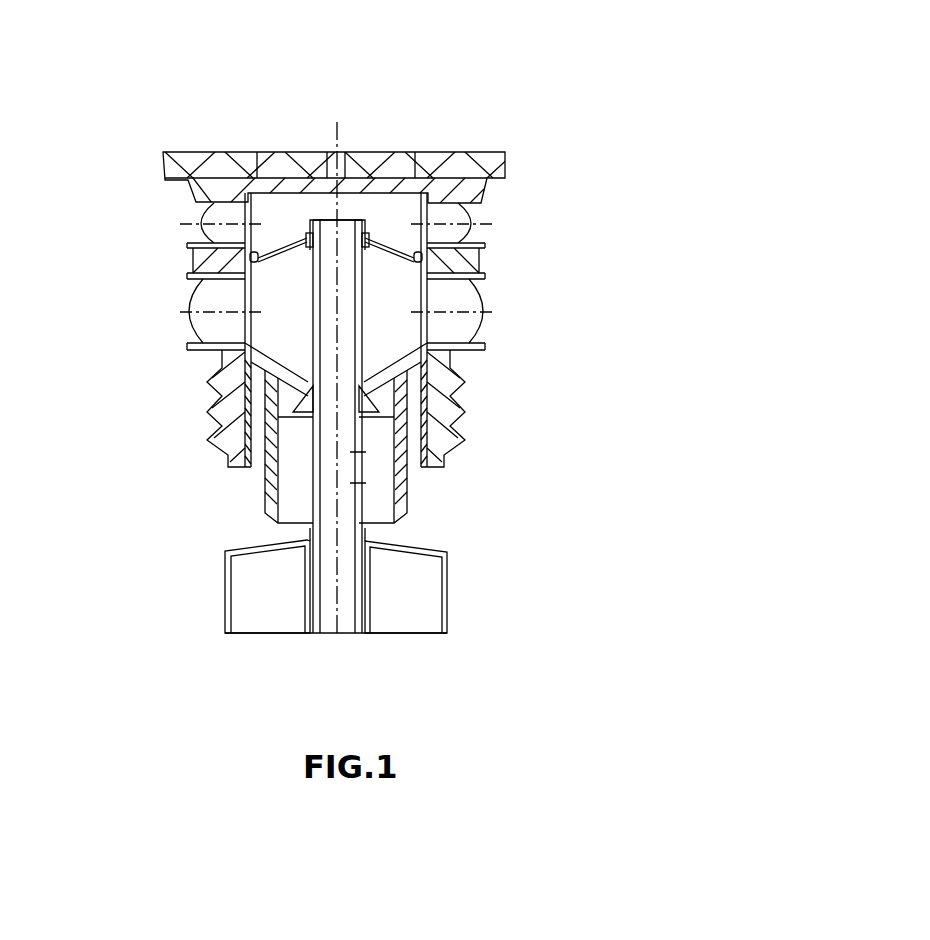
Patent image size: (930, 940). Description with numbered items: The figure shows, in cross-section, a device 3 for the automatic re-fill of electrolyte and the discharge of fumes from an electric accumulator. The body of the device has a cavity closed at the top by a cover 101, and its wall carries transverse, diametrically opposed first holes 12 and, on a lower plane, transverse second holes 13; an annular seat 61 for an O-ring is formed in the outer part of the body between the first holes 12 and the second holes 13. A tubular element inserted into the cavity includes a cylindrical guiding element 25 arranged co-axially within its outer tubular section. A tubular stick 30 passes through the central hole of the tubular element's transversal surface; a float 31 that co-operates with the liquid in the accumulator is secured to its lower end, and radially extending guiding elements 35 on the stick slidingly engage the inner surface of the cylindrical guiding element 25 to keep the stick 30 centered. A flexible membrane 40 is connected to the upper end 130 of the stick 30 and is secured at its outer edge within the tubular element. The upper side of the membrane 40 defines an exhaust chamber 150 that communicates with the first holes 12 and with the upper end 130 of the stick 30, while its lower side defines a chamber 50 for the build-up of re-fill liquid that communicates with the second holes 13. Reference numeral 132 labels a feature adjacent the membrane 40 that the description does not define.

The device 3 is at (466, 124).
The first holes 12 is at (470, 220).
The second holes 13 is at (458, 303).
The cylindrical guiding element 25 is at (268, 490).
The tubular stick 30 is at (365, 528).
The float 31 is at (448, 617).
The guiding elements 35 is at (278, 522).
The flexible membrane 40 is at (277, 248).
The chamber 50 is at (315, 268).
The annular seat 61 is at (478, 263).
The cover 101 is at (388, 217).
The upper end 130 is at (325, 217).
The spring ends 132 is at (258, 258).
The exhaust chamber 150 is at (455, 180).